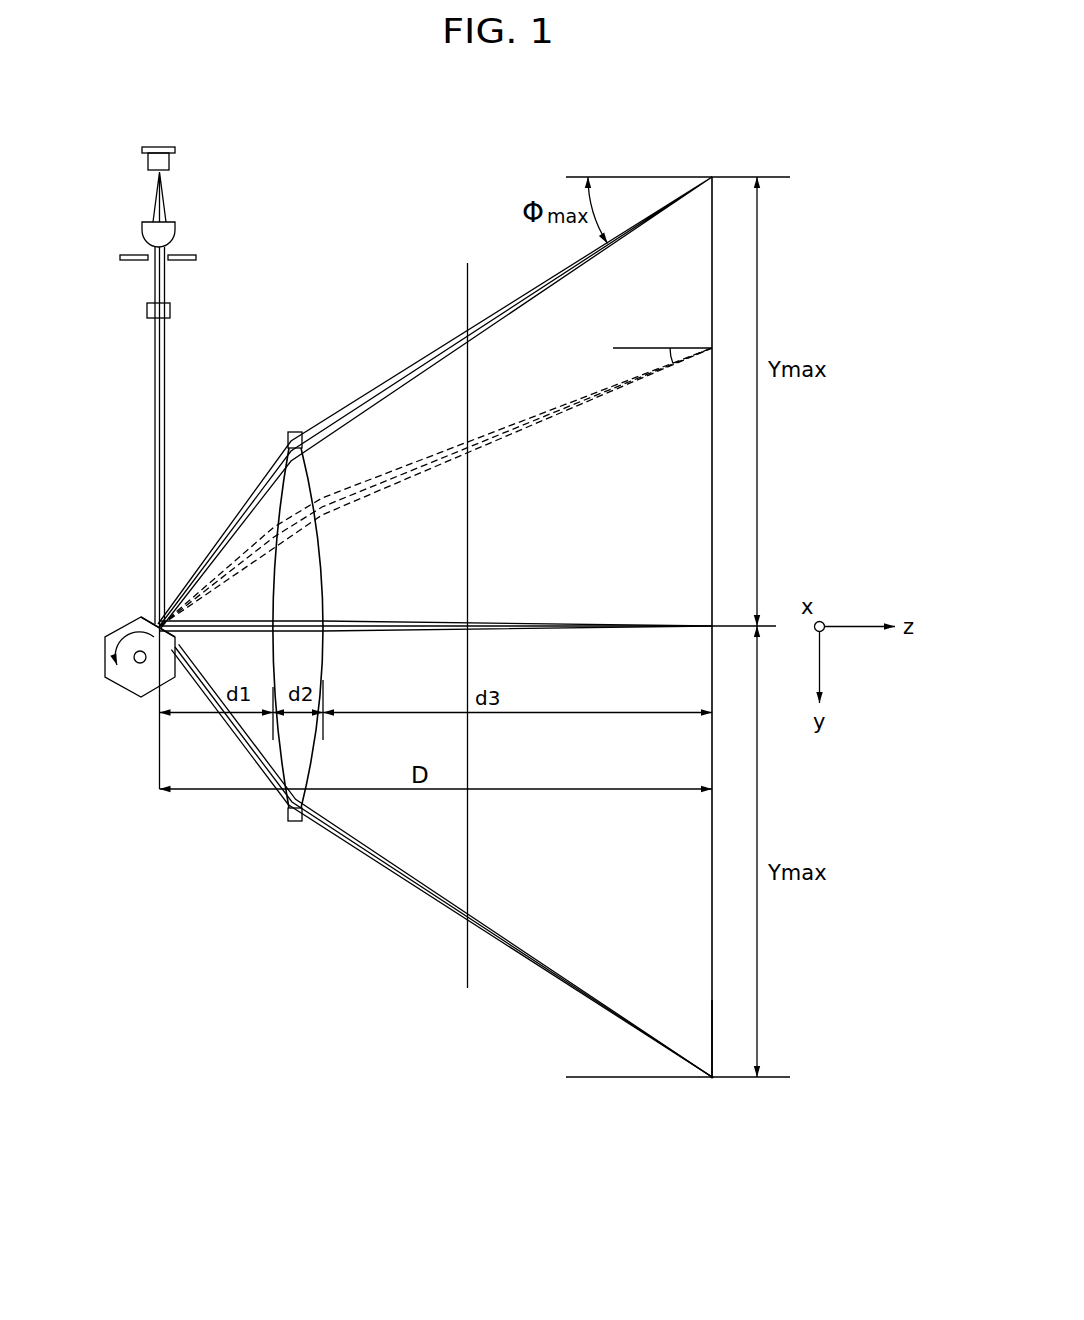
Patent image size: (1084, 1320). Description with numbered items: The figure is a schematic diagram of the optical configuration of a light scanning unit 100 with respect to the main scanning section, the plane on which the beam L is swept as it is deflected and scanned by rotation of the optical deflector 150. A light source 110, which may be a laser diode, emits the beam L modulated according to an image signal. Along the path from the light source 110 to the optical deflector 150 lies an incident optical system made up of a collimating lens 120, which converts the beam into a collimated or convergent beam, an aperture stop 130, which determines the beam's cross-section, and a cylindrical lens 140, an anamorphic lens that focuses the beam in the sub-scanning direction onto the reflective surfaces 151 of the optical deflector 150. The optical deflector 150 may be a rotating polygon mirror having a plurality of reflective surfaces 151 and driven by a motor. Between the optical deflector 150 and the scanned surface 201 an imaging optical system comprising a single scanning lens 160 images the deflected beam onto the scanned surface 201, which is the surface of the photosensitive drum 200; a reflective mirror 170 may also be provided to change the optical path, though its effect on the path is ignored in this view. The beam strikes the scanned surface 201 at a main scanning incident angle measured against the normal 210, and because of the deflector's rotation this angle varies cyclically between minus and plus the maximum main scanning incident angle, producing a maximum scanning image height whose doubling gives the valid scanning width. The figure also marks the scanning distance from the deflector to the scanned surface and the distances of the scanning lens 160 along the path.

The light scanning unit 100 is at (711, 128).
The light source 110 is at (172, 161).
The collimating lens 120 is at (171, 232).
The aperture stop 130 is at (192, 258).
The cylindrical lens 140 is at (170, 311).
The optical deflector 150 is at (127, 683).
The reflective surface 151 is at (150, 621).
The scanning lens 160 is at (296, 815).
The reflective mirror 170 is at (467, 970).
The photosensitive drum 200 is at (602, 1133).
The scanned surface 201 is at (712, 1042).
The normal 210 is at (641, 347).